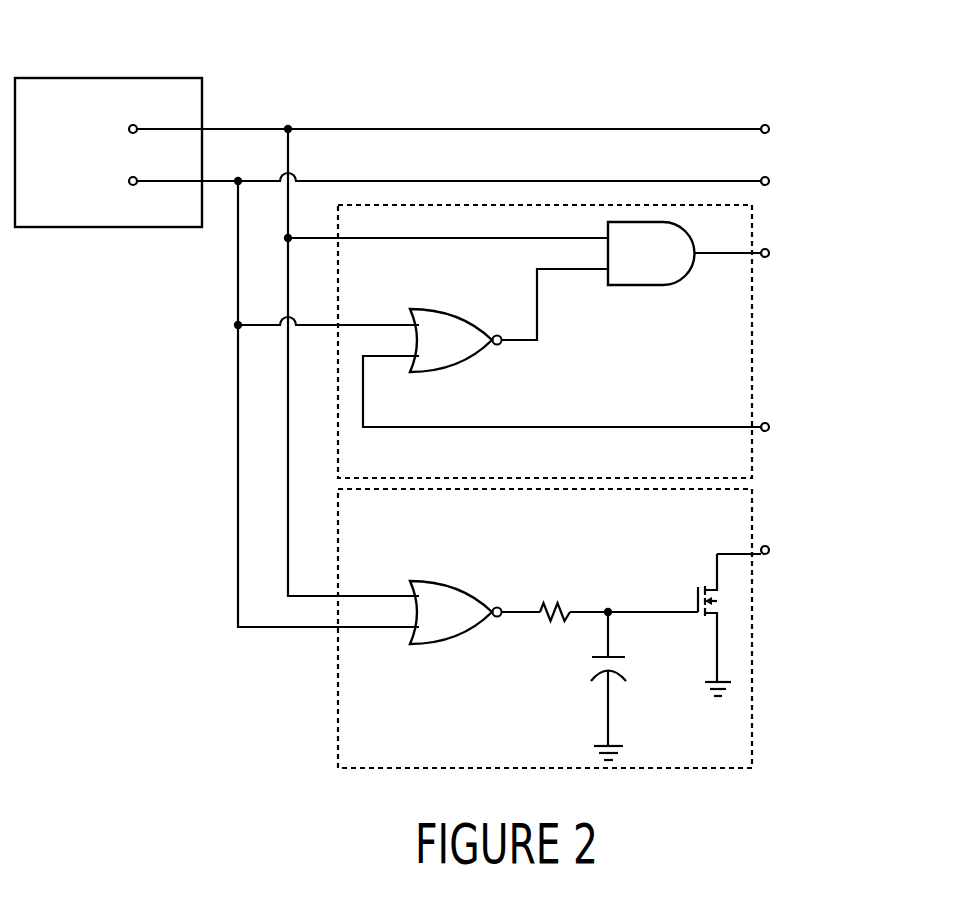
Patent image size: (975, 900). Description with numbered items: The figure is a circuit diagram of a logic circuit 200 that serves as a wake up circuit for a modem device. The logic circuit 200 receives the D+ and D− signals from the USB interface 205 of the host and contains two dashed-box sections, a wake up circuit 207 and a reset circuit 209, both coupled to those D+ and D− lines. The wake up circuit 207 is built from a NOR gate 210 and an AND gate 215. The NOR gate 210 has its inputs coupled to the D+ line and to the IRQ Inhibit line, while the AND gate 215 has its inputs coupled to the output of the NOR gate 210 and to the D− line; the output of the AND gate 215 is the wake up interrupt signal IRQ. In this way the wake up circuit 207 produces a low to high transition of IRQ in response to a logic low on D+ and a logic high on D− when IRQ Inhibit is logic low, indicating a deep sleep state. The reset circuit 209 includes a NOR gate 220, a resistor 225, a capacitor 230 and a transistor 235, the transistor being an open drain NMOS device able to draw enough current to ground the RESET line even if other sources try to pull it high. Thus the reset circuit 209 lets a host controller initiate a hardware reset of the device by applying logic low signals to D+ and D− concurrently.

The logic circuit 200 is at (568, 88).
The USB interface 205 is at (110, 77).
The wake up circuit 207 is at (338, 363).
The reset circuit 209 is at (338, 650).
The NOR gate 210 is at (448, 372).
The AND gate 215 is at (640, 285).
The NOR gate 220 is at (452, 643).
The resistor 225 is at (556, 592).
The capacitor 230 is at (627, 667).
The transistor 235 is at (697, 590).